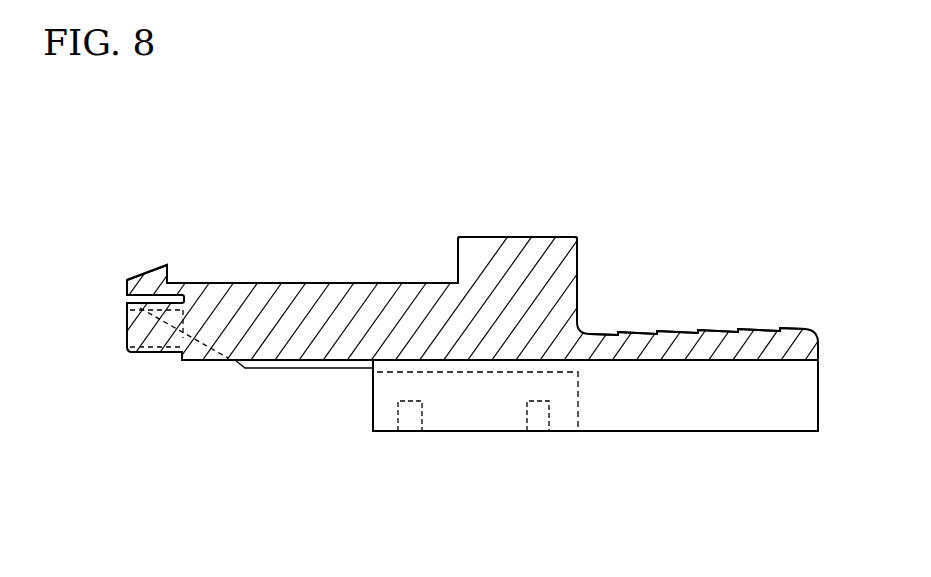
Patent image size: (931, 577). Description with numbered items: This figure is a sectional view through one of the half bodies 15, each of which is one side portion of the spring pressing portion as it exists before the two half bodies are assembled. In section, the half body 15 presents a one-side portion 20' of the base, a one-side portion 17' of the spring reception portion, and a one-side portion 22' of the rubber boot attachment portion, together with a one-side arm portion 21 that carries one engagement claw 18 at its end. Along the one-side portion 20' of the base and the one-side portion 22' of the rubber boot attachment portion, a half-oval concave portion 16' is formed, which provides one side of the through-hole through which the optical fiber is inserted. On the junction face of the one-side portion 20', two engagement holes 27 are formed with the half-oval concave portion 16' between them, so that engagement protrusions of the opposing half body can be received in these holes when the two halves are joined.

The half body 15 is at (600, 178).
The half-oval concave portion 16′ is at (453, 362).
The one-side portion of the spring reception portion 17′ is at (372, 405).
The engagement claw 18 is at (150, 265).
The one-side portion of the base 20′ is at (488, 240).
The one-side arm portion 21 is at (270, 283).
The one-side portion of the rubber boot attachment portion 22′ is at (680, 333).
The engagement hole 27 is at (420, 410).